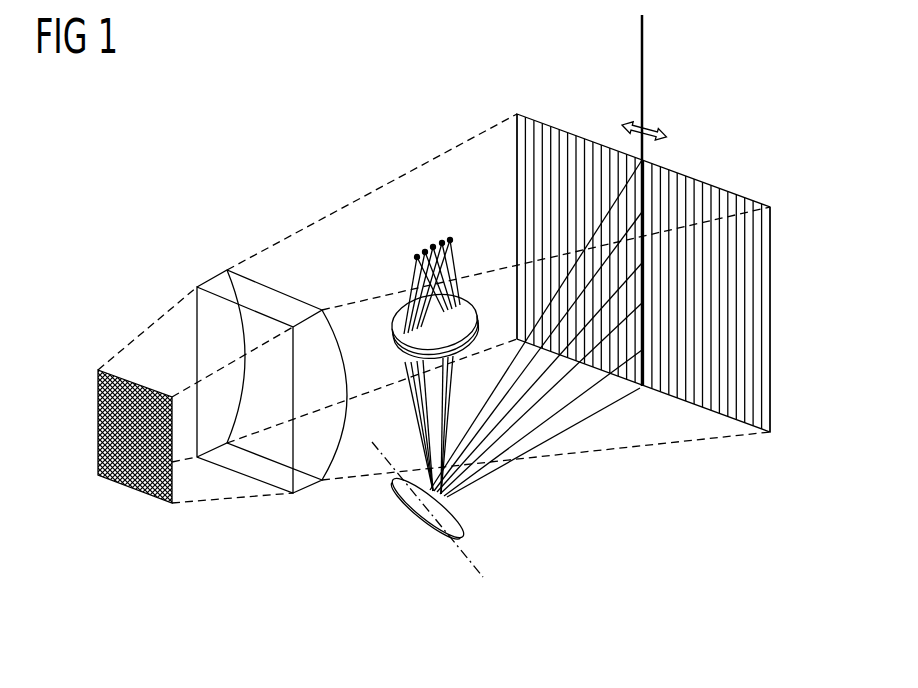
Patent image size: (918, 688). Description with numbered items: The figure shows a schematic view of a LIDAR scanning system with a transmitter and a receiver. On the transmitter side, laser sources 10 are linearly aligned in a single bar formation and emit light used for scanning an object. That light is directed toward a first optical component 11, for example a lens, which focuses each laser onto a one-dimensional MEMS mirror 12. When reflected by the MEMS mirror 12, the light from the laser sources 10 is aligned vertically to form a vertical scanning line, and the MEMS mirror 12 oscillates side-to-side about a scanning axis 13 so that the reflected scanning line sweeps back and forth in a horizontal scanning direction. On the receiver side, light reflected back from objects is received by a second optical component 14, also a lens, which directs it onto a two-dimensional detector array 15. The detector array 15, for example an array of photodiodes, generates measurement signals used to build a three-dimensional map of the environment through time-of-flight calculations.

The laser sources 10 is at (442, 232).
The first optical component 11 is at (460, 325).
The one-dimensional MEMS mirror 12 is at (458, 517).
The scanning axis 13 is at (460, 555).
The second optical component 14 is at (223, 272).
The two-dimensional detector array 15 is at (97, 425).